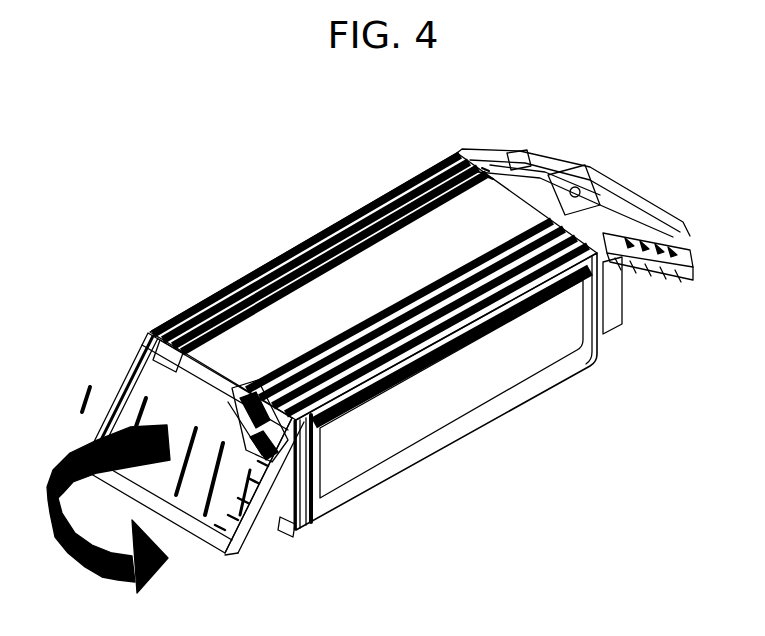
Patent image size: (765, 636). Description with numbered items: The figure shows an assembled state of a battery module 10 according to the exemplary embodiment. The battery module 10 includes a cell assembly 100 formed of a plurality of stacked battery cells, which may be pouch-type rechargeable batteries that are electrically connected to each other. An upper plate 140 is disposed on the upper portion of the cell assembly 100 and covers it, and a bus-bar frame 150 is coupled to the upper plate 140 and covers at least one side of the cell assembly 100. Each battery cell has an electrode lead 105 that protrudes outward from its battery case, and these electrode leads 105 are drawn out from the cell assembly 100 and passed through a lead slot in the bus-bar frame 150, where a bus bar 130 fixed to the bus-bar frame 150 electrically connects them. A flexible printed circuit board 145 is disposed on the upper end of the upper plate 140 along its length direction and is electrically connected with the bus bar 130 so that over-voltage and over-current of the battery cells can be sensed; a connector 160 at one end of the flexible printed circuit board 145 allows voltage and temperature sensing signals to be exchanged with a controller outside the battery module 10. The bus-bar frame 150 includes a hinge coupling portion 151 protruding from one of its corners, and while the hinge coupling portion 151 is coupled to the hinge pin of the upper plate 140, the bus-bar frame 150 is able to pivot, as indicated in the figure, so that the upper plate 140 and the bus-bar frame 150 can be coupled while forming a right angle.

The battery module 10 is at (172, 209).
The cell assembly 100 is at (413, 430).
The electrode lead 105 is at (292, 527).
The bus bar 130 is at (114, 393).
The upper plate 140 is at (268, 263).
The flexible printed circuit board 145 is at (238, 392).
The bus-bar frame 150 is at (212, 548).
The hinge coupling portion 151 is at (334, 430).
The connector 160 is at (250, 513).